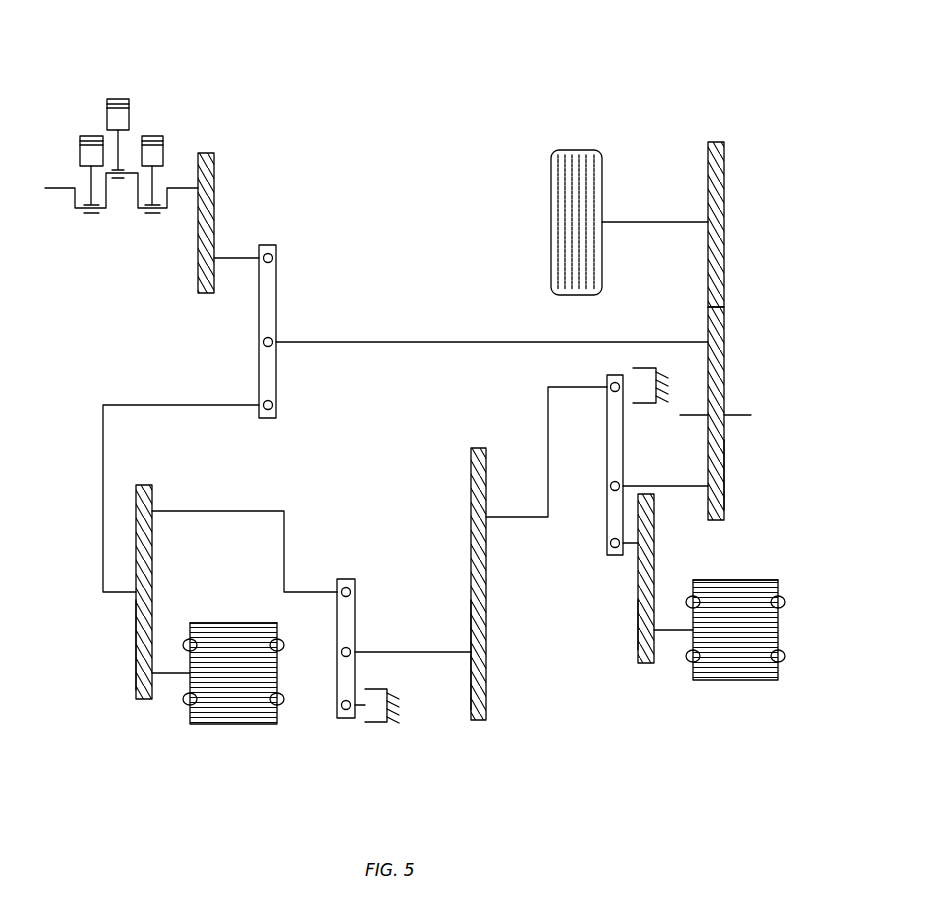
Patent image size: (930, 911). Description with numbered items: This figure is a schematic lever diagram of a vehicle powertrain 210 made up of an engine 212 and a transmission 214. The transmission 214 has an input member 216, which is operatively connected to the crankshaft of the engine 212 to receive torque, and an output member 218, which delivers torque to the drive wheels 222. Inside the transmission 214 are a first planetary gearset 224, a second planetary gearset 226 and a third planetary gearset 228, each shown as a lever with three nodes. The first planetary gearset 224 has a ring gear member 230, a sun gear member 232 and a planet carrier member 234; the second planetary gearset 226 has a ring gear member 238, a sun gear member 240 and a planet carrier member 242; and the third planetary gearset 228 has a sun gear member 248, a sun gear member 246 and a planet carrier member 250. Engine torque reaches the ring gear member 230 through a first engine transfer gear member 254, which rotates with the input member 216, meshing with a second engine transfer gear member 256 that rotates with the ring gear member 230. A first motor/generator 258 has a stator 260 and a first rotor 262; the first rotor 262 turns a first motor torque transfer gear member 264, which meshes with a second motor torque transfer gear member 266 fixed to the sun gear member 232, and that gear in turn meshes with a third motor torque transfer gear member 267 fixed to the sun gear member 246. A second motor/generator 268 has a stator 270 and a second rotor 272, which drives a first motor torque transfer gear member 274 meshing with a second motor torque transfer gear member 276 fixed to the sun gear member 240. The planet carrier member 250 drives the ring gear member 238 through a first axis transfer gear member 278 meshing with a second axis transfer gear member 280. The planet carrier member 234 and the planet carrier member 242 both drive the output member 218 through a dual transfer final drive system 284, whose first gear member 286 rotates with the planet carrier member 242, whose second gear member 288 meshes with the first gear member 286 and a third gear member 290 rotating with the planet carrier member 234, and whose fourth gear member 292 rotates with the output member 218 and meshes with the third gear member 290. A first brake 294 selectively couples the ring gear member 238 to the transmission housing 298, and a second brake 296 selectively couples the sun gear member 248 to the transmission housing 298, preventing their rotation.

The vehicle powertrain 210 is at (173, 50).
The engine 212 is at (80, 150).
The transmission 214 is at (572, 736).
The input member 216 is at (177, 188).
The output member 218 is at (673, 221).
The drive wheels 222 is at (575, 150).
The first planetary gearset 224 is at (277, 313).
The second planetary gearset 226 is at (624, 455).
The third planetary gearset 228 is at (356, 622).
The ring gear member 230 is at (273, 258).
The sun gear member 232 is at (273, 405).
The planet carrier member 234 is at (263, 342).
The ring gear member 238 is at (612, 377).
The sun gear member 240 is at (610, 543).
The planet carrier member 242 is at (610, 486).
The sun gear member 246 is at (351, 592).
The sun gear member 248 is at (341, 705).
The planet carrier member 250 is at (341, 652).
The first engine transfer gear member 254 is at (214, 184).
The second engine transfer gear member 256 is at (198, 261).
The first motor/generator 258 is at (243, 736).
The stator 260 is at (245, 623).
The first rotor 262 is at (170, 675).
The first motor torque transfer gear member 264 is at (136, 675).
The second motor torque transfer gear member 266 is at (136, 614).
The third motor torque transfer gear member 267 is at (147, 485).
The second motor/generator 268 is at (745, 700).
The stator 270 is at (740, 580).
The second rotor 272 is at (672, 632).
The first motor torque transfer gear member 274 is at (637, 630).
The second motor torque transfer gear member 276 is at (655, 571).
The first axis transfer gear member 278 is at (487, 654).
The second axis transfer gear member 280 is at (469, 503).
The dual transfer final drive system 284 is at (719, 108).
The first gear member 286 is at (725, 485).
The second gear member 288 is at (725, 403).
The third gear member 290 is at (725, 338).
The fourth gear member 292 is at (725, 220).
The first brake 294 is at (647, 360).
The second brake 296 is at (375, 740).
The transmission housing 298 is at (393, 698).